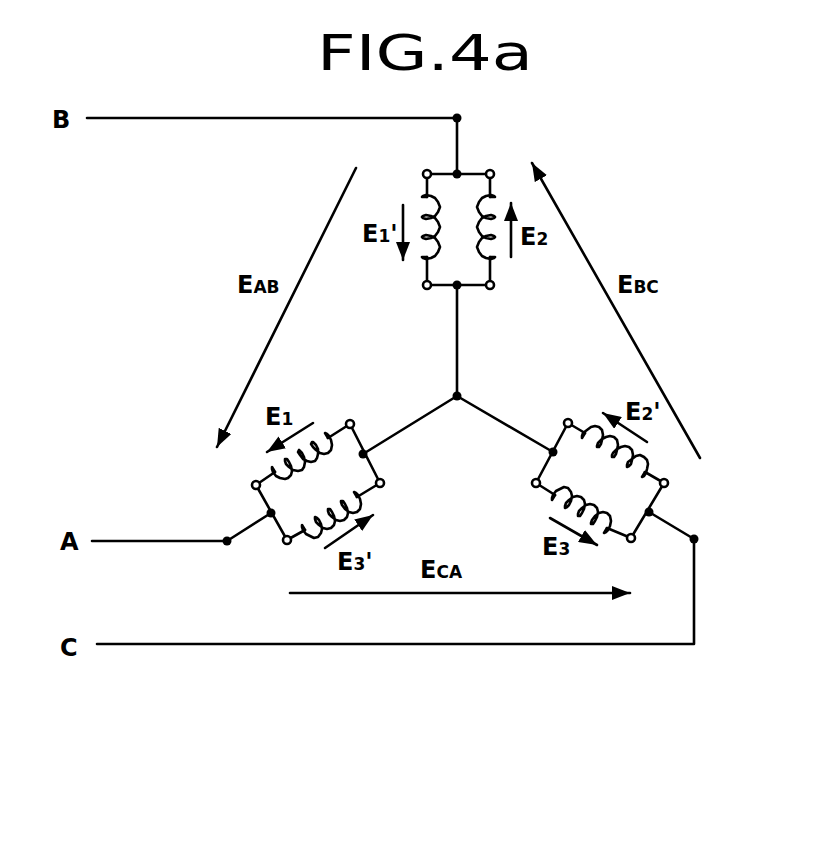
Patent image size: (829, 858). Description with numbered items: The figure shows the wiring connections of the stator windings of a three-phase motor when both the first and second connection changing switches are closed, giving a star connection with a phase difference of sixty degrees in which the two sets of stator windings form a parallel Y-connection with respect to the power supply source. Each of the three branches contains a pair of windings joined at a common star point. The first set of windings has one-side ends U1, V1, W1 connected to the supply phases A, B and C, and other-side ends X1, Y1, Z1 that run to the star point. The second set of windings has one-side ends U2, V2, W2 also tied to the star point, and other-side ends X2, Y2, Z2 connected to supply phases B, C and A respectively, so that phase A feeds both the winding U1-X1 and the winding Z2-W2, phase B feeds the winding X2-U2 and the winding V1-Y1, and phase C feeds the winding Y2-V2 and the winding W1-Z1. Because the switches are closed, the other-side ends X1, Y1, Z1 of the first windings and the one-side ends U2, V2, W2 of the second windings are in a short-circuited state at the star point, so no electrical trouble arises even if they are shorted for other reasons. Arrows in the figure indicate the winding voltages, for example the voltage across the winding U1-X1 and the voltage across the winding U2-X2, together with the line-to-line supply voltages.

The other-side end of stator winding X2 is at (420, 160).
The one-side end of stator winding V1 is at (498, 160).
The one-side end of stator winding U2 is at (415, 302).
The other-side end of stator winding Y1 is at (499, 302).
The other-side end of stator winding X1 is at (365, 413).
The one-side end of stator winding W2 is at (407, 479).
The one-side end of stator winding U1 is at (236, 489).
The other-side end of stator winding Z2 is at (286, 557).
The one-side end of stator winding V2 is at (556, 410).
The other-side end of stator winding Z1 is at (520, 482).
The other-side end of stator winding Y2 is at (684, 491).
The one-side end of stator winding W1 is at (644, 555).